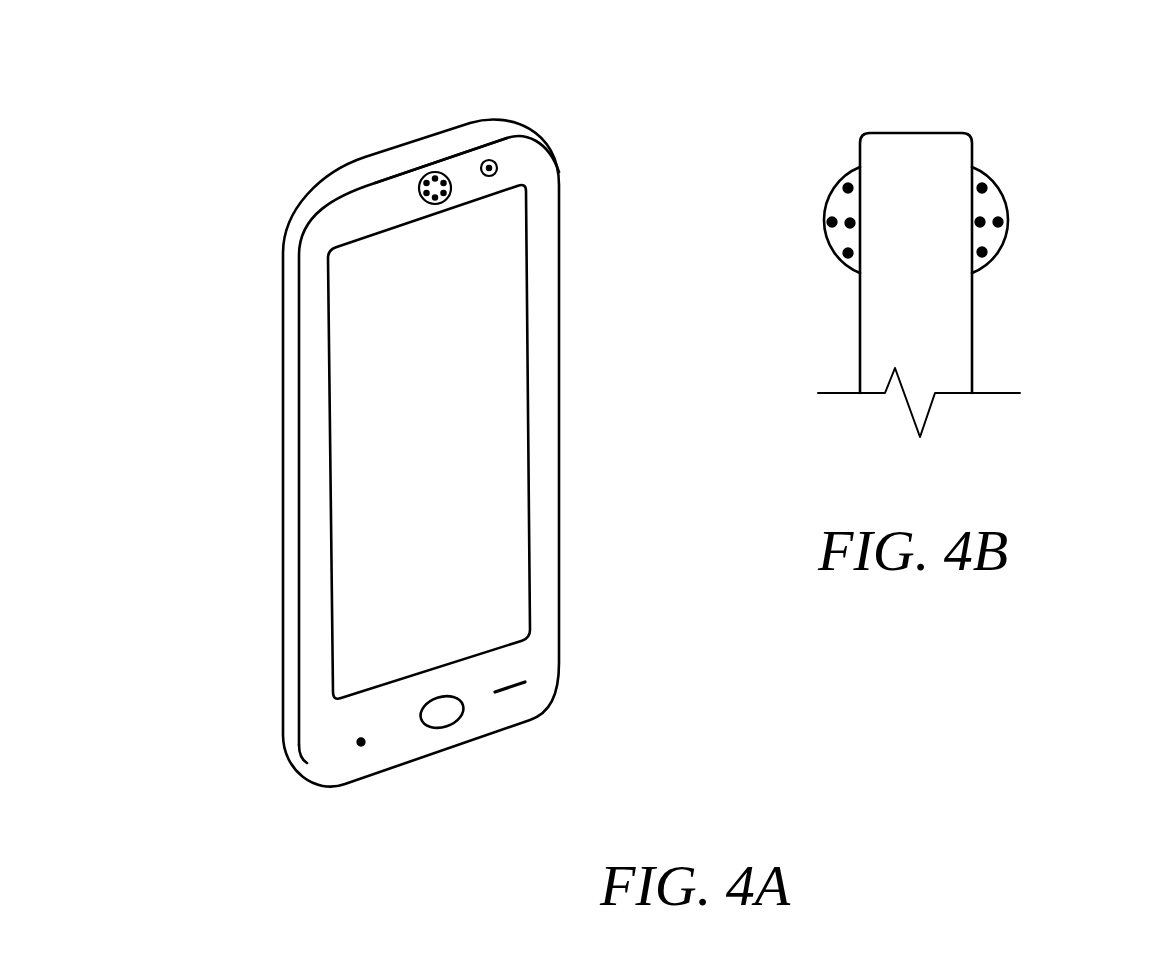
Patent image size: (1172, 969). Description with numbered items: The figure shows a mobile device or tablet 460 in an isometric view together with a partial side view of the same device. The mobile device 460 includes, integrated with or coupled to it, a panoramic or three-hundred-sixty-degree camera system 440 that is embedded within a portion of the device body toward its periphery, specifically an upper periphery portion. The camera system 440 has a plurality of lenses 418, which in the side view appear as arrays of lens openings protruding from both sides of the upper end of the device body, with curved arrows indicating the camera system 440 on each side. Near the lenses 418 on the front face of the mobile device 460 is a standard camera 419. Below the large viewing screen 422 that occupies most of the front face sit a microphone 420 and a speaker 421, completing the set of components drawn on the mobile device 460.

In FIG. 4A, the mobile device or tablet 460 is at (238, 622).
In FIG. 4A, the panoramic or 360-degree camera system 440 is at (416, 106).
In FIG. 4B, the panoramic or 360-degree camera system 440 is at (800, 172).
In FIG. 4A, the lenses 418 is at (421, 184).
In FIG. 4B, the lenses 418 is at (830, 222).
In FIG. 4A, the standard camera 419 is at (498, 167).
In FIG. 4A, the microphone 420 is at (361, 746).
In FIG. 4A, the speaker 421 is at (517, 686).
In FIG. 4A, the viewing screen 422 is at (377, 495).